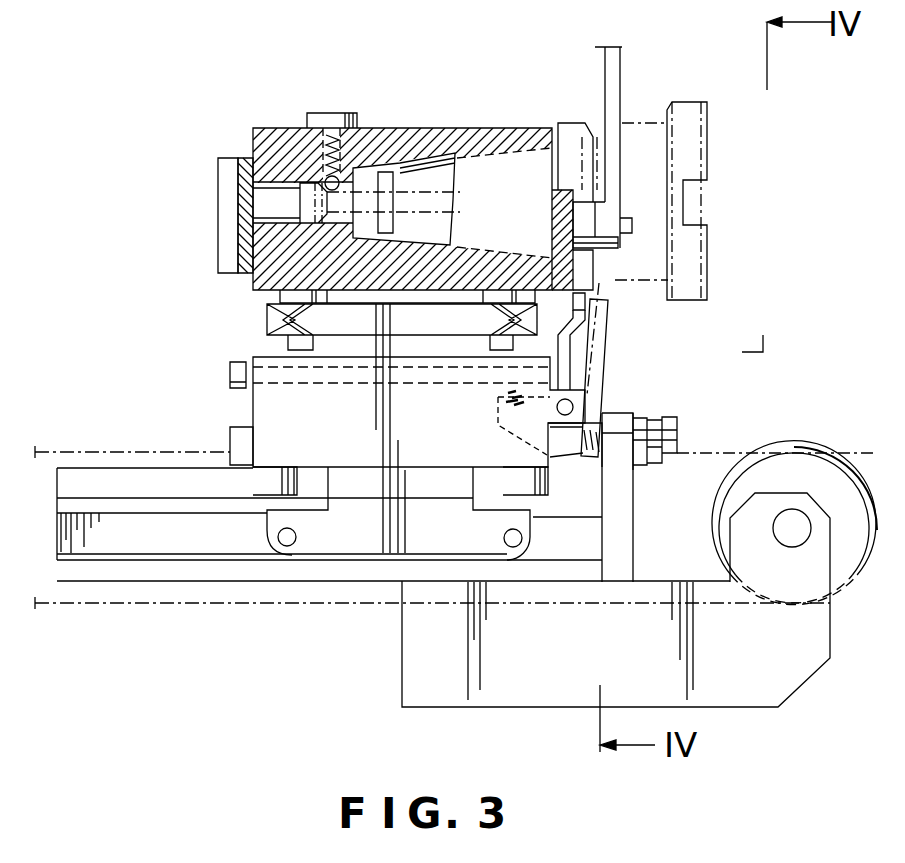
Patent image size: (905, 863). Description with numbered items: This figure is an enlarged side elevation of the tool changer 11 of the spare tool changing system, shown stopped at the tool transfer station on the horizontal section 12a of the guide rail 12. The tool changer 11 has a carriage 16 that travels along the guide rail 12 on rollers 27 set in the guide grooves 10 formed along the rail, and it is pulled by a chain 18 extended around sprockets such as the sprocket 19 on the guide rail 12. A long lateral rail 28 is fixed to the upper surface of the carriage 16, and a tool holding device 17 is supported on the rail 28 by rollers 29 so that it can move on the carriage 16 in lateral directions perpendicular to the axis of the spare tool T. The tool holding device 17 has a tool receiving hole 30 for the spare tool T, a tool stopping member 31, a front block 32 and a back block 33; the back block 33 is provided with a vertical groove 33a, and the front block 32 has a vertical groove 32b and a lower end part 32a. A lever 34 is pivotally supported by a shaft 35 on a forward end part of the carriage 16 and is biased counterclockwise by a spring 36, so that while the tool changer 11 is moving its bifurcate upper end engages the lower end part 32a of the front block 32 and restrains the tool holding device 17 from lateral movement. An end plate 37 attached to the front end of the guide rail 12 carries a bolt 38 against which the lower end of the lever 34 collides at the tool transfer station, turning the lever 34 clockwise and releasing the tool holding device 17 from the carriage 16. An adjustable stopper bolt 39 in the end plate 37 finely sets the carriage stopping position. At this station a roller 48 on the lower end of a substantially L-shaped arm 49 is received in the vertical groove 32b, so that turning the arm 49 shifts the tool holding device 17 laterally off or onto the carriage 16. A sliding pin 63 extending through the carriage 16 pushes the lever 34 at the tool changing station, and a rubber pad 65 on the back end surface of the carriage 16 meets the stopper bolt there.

The guide grooves 10 is at (52, 523).
The tool changer 11 is at (207, 287).
The guide rail 12 is at (127, 582).
The horizontal section 12a is at (133, 473).
The carriage 16 is at (253, 401).
The tool holding device 17 is at (483, 128).
The chain 18 is at (237, 603).
The sprocket 19 is at (840, 492).
The rollers 27 is at (270, 547).
The lateral rail 28 is at (375, 325).
The rollers 29 is at (270, 326).
The tool receiving hole 30 is at (418, 170).
The tool stopping member 31 is at (330, 177).
The front block 32 is at (561, 222).
The lower end part 32a is at (597, 338).
The vertical groove 32b is at (597, 285).
The back block 33 is at (240, 180).
The vertical groove 33a is at (226, 207).
The lever 34 is at (595, 363).
The shaft 35 is at (558, 410).
The spring 36 is at (500, 398).
The end plate 37 is at (623, 527).
The bolt 38 is at (600, 468).
The adjustable stopper bolt 39 is at (676, 423).
The roller 48 is at (585, 210).
The arm 49 is at (608, 80).
The sliding pin 63 is at (236, 360).
The rubber pad 65 is at (238, 438).
The spare tool T is at (686, 100).